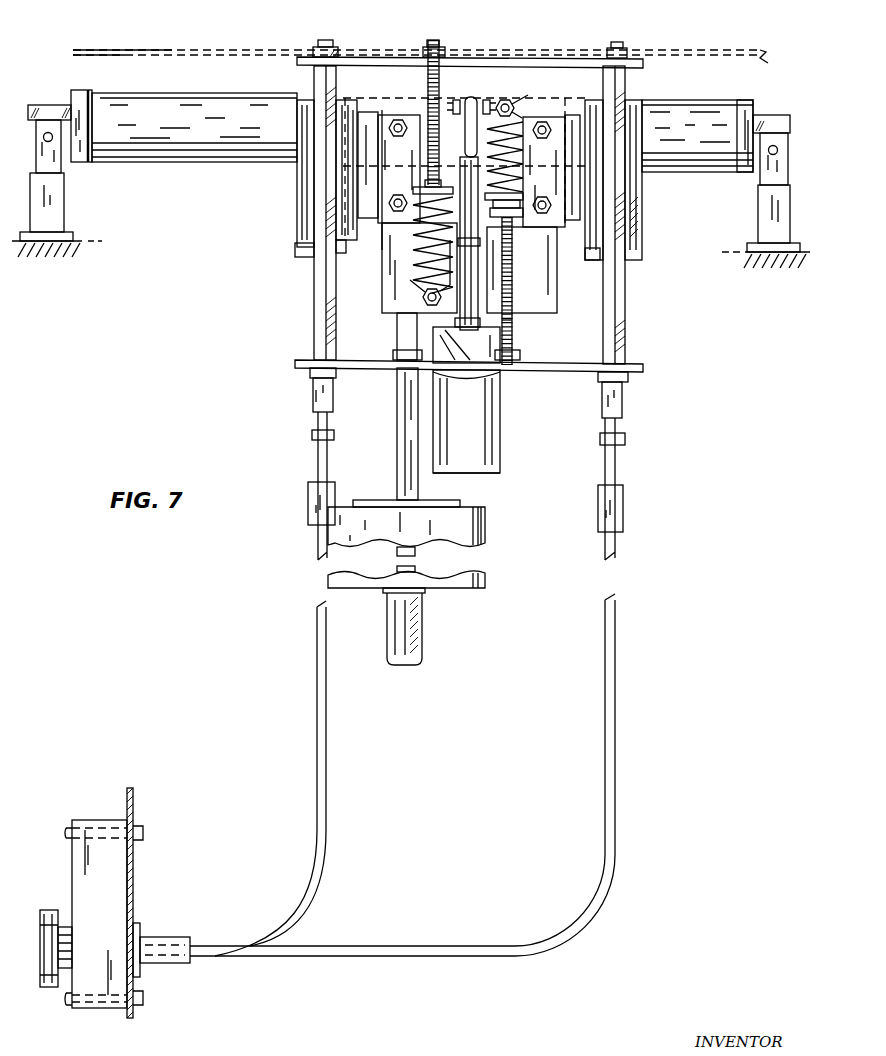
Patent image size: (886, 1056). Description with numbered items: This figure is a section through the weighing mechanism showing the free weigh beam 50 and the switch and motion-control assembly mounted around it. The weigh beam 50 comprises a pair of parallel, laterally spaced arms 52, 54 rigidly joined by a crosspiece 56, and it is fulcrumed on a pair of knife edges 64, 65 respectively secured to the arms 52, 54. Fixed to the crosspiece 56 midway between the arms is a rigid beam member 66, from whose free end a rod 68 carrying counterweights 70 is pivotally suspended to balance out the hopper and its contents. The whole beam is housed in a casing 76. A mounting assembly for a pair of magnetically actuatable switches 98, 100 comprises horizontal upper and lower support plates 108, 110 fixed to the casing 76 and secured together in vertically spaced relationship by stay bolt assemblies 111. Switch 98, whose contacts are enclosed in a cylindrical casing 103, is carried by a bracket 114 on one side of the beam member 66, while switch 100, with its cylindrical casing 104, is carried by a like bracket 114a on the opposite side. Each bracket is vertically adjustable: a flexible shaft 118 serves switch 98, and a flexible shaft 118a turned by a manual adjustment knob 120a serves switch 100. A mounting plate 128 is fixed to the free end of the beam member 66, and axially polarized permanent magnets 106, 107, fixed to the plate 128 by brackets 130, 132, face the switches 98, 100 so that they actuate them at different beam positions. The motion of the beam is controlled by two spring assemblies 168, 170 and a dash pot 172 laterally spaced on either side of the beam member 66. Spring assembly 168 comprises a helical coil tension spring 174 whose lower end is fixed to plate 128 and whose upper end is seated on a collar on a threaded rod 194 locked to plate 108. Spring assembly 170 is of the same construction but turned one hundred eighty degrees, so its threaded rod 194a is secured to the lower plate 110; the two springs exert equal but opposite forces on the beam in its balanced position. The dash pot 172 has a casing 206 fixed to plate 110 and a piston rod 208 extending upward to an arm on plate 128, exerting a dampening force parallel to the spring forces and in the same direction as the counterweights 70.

The free weigh beam 50 is at (88, 93).
The arm 52 is at (78, 152).
The arm 54 is at (755, 107).
The crosspiece 56 is at (165, 152).
The knife edge 64 is at (40, 108).
The knife edge 65 is at (772, 118).
The beam member 66 is at (412, 103).
The rod 68 is at (397, 452).
The counterweights 70 is at (478, 530).
The casing 76 is at (215, 50).
The switch 98 is at (352, 240).
The switch 100 is at (585, 252).
The cylindrical casing 103 is at (347, 206).
The cylindrical casing 104 is at (597, 232).
The permanent magnet 106 is at (368, 125).
The permanent magnet 107 is at (574, 128).
The upper support plate 108 is at (588, 59).
The lower support plate 110 is at (560, 372).
The stay bolt assemblies 111 is at (318, 317).
The bracket 114 is at (298, 244).
The bracket 114a is at (640, 233).
The flexible shaft 118 is at (320, 548).
The flexible shaft 118a is at (617, 550).
The manual adjustment knob 120a is at (50, 980).
The mounting plate 128 is at (455, 92).
The bracket 130 is at (386, 125).
The bracket 132 is at (556, 112).
The spring assembly 168 is at (406, 263).
The spring assembly 170 is at (513, 280).
The dash pot 172 is at (506, 463).
The helical coil tension spring 174 is at (420, 252).
The threaded rod 194 is at (438, 40).
The threaded rod 194a is at (500, 332).
The casing 206 is at (491, 437).
The piston rod 208 is at (465, 320).